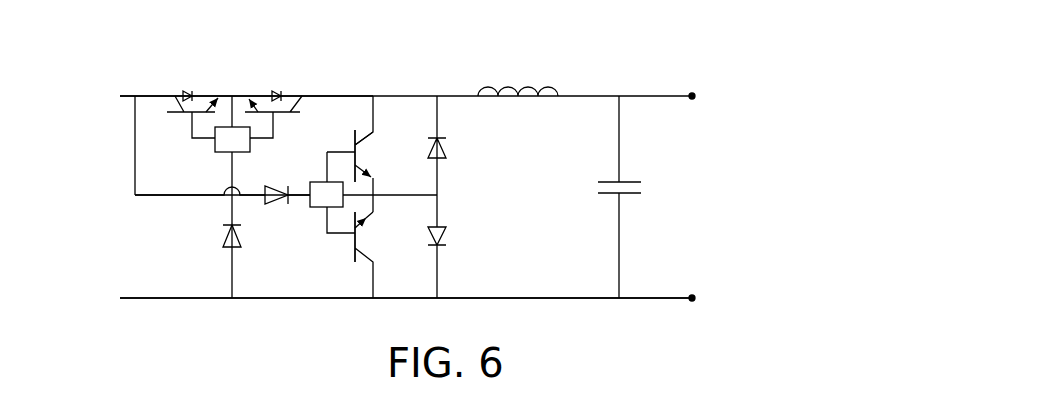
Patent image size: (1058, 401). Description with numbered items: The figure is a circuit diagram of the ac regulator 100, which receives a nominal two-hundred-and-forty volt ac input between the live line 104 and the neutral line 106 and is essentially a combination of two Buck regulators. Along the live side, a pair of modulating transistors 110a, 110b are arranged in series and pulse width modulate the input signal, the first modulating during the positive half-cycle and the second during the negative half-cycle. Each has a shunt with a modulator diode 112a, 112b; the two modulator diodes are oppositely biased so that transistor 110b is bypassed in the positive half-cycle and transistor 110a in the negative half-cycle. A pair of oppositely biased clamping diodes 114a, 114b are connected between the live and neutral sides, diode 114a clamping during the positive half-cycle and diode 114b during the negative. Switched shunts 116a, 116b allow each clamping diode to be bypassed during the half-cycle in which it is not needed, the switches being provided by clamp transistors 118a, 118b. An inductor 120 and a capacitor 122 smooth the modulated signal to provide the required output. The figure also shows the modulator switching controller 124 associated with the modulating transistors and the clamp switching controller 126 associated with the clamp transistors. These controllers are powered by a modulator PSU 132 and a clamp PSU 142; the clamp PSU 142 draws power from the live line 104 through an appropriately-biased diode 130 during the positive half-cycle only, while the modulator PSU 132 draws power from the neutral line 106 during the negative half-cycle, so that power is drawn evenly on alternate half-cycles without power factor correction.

The ac regulator 100 is at (702, 52).
The live line 104 is at (322, 96).
The neutral line 106 is at (155, 300).
The modulating transistor 110a is at (178, 120).
The modulating transistor 110b is at (287, 123).
The modulator diode 112a is at (181, 86).
The modulator diode 112b is at (270, 87).
The clamping diode 114a is at (447, 152).
The clamping diode 114b is at (443, 235).
The switched shunt 116a is at (374, 293).
The switched shunt 116b is at (373, 104).
The clamp transistor 118a is at (347, 252).
The clamp transistor 118b is at (368, 148).
The inductor 120 is at (522, 82).
The capacitor 122 is at (590, 176).
The modulator switching controller 124 is at (261, 148).
The clamp switching controller 126 is at (309, 182).
The diode 130 is at (273, 206).
The modulator PSU 132 is at (213, 153).
The clamp PSU 142 is at (316, 210).